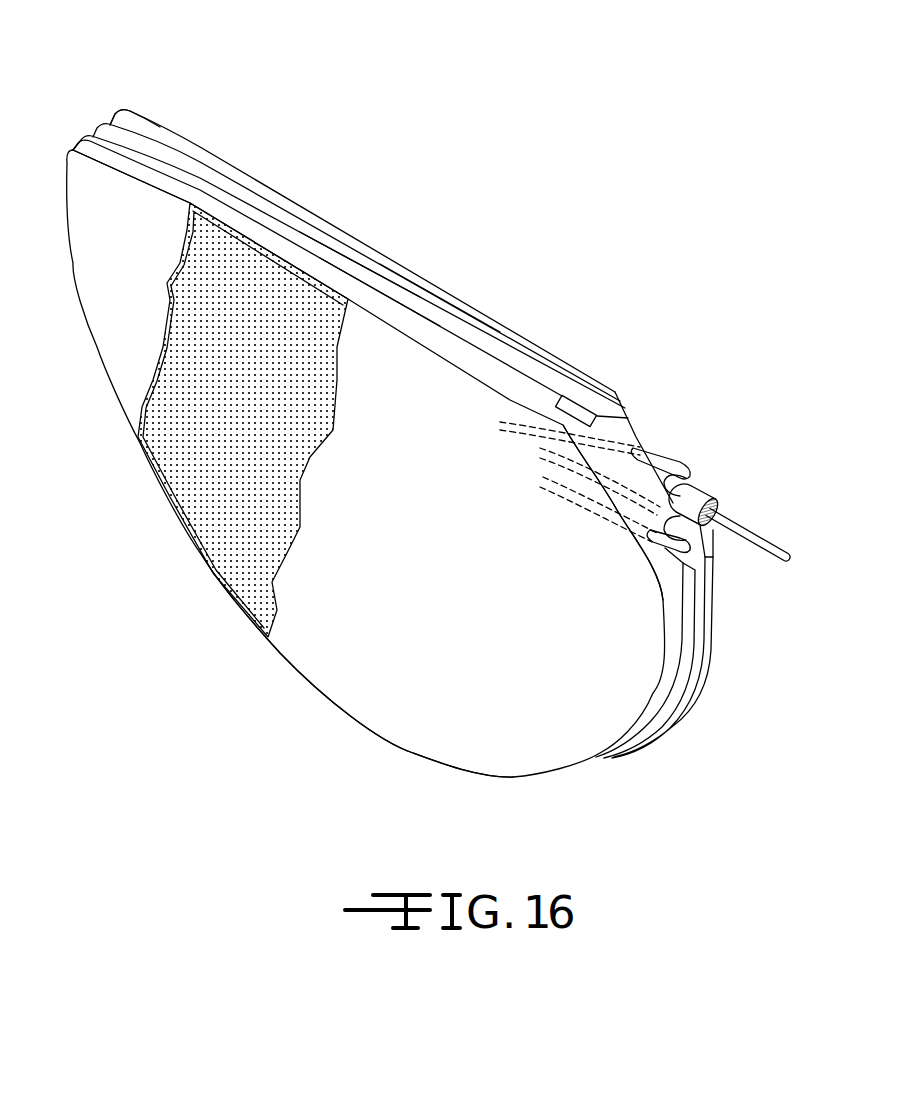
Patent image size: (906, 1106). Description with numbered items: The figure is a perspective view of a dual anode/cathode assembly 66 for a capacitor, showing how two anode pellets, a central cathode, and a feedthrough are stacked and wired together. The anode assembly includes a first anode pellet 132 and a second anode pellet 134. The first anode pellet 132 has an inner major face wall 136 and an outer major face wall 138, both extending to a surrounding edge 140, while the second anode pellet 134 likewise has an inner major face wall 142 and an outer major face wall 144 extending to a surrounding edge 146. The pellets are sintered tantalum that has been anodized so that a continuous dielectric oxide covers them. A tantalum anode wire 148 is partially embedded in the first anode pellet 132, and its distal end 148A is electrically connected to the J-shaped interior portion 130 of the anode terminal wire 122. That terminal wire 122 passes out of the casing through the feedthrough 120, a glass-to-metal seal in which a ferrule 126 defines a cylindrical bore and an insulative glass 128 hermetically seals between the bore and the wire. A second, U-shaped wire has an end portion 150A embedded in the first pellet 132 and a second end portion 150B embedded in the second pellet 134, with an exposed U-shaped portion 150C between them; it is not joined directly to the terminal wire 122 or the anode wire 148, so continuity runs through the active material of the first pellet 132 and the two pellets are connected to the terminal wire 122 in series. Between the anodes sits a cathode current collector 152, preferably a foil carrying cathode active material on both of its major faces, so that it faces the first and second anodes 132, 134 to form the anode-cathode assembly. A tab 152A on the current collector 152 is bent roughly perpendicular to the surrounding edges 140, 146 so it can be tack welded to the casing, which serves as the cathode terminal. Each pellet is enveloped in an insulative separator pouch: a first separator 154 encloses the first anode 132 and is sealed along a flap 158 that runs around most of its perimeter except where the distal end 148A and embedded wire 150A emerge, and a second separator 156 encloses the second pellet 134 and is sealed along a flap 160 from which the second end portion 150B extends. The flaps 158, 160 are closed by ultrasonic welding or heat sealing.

The lens assembly 66 is at (553, 222).
The feedthrough 120 is at (733, 482).
The anode terminal wire 122 is at (770, 540).
The ferrule 126 is at (713, 487).
The insulative glass 128 is at (717, 557).
The J-shaped interior portion 130 is at (700, 470).
The first anode pellet 132 is at (370, 267).
The second anode pellet 134 is at (245, 533).
The inner major face wall 136 is at (400, 293).
The outer major face wall 138 is at (440, 297).
The surrounding edge 140 is at (160, 147).
The inner major face wall 142 is at (167, 173).
The outer major face wall 144 is at (118, 173).
The surrounding edge 146 is at (118, 152).
The anode wire 148 is at (500, 420).
The distal end 148A is at (667, 460).
The end portion 150A is at (547, 447).
The second end portion 150B is at (547, 478).
The exposed U-shaped portion 150C is at (662, 583).
The cathode current collector 152 is at (503, 363).
The tab 152A is at (580, 413).
The first separator 154 is at (249, 176).
The second separator 156 is at (360, 638).
The flap 158 is at (713, 628).
The flap 160 is at (697, 647).